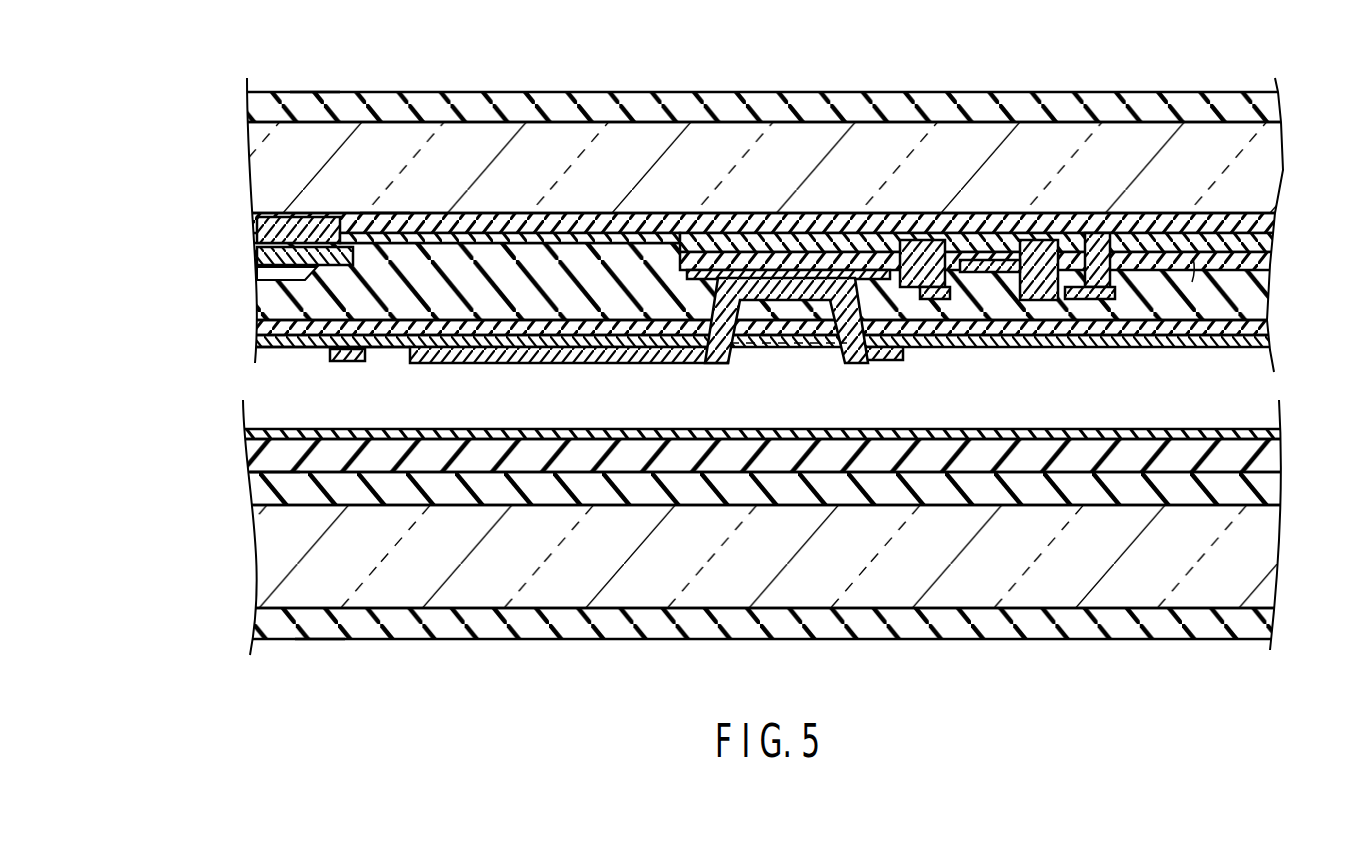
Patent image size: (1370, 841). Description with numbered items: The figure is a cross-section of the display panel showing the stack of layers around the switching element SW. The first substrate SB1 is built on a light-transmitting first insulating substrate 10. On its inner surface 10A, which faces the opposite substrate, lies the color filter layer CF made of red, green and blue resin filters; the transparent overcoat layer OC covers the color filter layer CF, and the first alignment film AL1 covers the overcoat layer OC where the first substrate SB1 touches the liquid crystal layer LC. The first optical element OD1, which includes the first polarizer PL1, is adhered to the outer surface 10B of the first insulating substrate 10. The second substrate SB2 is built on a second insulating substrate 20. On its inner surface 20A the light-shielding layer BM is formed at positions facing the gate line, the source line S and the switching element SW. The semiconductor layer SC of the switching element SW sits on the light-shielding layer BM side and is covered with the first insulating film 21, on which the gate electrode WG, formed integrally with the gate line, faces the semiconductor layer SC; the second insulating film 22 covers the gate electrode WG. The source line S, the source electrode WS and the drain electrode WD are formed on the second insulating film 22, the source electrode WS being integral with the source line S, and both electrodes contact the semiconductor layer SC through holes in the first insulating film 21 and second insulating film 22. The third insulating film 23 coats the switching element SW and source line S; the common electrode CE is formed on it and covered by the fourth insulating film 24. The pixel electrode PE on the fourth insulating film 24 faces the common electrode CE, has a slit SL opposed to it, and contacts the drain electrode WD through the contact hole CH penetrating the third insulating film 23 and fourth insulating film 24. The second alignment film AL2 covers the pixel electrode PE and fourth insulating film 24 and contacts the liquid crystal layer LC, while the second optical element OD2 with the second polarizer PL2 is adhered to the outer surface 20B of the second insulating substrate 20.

The second insulating substrate 20 is at (1278, 153).
The inner surface of the second insulating substrate 20A is at (386, 231).
The outer surface of the second insulating substrate 20B is at (313, 117).
The second optical element OD2 is at (725, 122).
The second polarizer PL2 is at (262, 98).
The light-shielding layer BM is at (278, 232).
The first insulating film 21 is at (1262, 241).
The second insulating film 22 is at (1262, 260).
The third insulating film 23 is at (1252, 298).
The fourth insulating film 24 is at (1262, 329).
The second alignment film AL2 is at (1246, 348).
The first alignment film AL1 is at (1276, 431).
The source line S is at (285, 301).
The second substrate SB2 is at (146, 125).
The first substrate SB1 is at (146, 430).
The liquid crystal layer LC is at (146, 355).
The first optical element OD1 is at (725, 634).
The first polarizer PL1 is at (264, 624).
The first insulating substrate 10 is at (1262, 570).
The inner surface of the first insulating substrate 10A is at (259, 496).
The outer surface of the first insulating substrate 10B is at (318, 614).
The overcoat layer OC is at (260, 447).
The color filter layer CF is at (1286, 489).
The common electrode CE is at (285, 352).
The slit SL is at (383, 356).
The pixel electrode PE is at (566, 362).
The contact hole CH is at (793, 348).
The drain electrode WD is at (937, 287).
The source electrode WS is at (1100, 287).
The gate electrode WG is at (1030, 240).
The semiconductor layer SC is at (1040, 245).
The switching element SW is at (1084, 224).